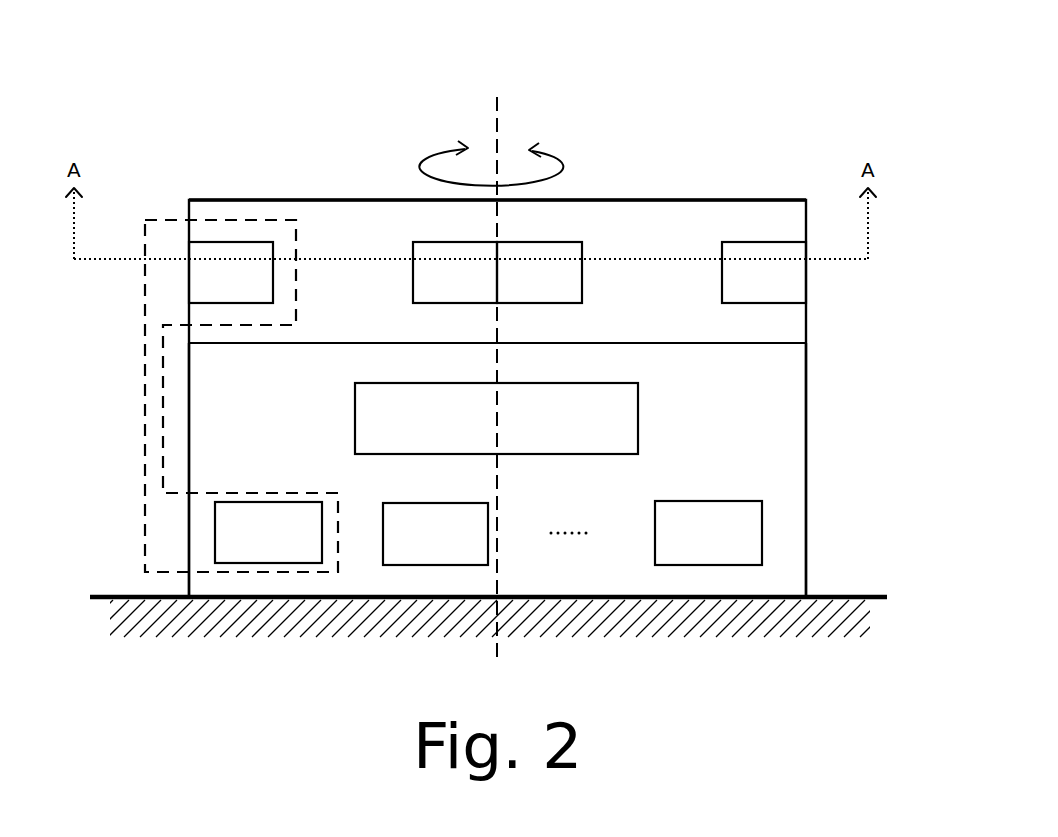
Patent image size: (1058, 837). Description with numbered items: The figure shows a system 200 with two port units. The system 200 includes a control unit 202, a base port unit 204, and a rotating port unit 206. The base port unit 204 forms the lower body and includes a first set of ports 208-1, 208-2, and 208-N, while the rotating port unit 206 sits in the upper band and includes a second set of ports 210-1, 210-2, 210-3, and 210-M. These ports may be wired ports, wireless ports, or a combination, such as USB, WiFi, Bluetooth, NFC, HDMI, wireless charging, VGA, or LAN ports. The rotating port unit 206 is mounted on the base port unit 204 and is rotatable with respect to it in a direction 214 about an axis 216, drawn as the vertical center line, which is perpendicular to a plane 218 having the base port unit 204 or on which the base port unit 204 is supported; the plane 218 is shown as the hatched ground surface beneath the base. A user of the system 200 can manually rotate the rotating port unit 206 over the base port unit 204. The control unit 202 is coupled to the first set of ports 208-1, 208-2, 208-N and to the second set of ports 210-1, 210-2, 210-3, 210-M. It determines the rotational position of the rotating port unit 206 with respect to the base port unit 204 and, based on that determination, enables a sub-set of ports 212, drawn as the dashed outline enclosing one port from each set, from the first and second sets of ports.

The system 200 is at (560, 78).
The control unit 202 is at (478, 427).
The base port unit 204 is at (806, 442).
The rotating port unit 206 is at (673, 200).
The port of the first set of ports 208-1 is at (239, 547).
The port of the first set of ports 208-2 is at (406, 547).
The port of the first set of ports 208-N is at (678, 547).
The port of the second set of ports 210-1 is at (202, 290).
The port of the second set of ports 210-2 is at (426, 290).
The port of the second set of ports 210-3 is at (511, 290).
The port of the second set of ports 210-M is at (733, 290).
The sub-set of ports 212 is at (173, 220).
The direction 214 is at (557, 153).
The axis 216 is at (497, 130).
The plane 218 is at (828, 597).